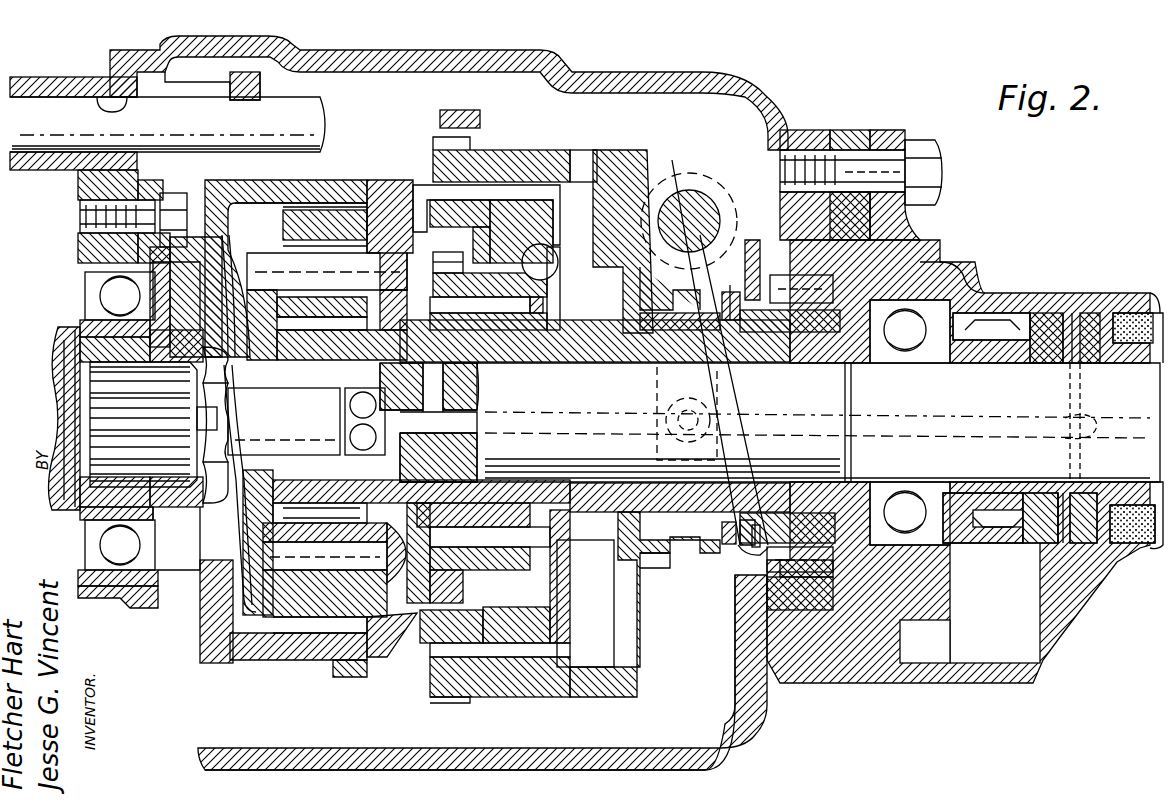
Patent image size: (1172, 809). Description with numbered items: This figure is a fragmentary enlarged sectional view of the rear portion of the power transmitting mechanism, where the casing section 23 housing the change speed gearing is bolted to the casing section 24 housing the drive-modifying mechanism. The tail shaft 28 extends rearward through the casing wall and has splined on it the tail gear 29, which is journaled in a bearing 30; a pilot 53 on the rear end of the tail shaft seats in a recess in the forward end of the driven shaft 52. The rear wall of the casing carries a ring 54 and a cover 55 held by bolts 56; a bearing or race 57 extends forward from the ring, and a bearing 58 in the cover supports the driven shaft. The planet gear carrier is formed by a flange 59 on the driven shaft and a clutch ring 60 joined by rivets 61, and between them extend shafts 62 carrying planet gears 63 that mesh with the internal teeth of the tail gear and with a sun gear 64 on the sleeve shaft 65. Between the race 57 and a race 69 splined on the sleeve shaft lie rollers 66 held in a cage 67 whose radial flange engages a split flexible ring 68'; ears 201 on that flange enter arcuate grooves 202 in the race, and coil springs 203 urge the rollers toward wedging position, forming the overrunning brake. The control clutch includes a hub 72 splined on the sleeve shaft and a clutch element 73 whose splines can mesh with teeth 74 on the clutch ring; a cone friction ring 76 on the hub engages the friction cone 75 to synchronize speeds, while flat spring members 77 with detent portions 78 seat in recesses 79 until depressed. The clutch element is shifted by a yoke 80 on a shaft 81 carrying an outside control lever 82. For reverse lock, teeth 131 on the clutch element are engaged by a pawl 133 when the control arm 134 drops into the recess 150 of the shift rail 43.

The casing section 23 is at (72, 80).
The casing section 24 is at (765, 738).
The intermediate or tail shaft 28 is at (64, 330).
The tail gear 29 is at (268, 660).
The bearing 30 is at (118, 565).
The shift rail 43 is at (282, 112).
The driven shaft 52 is at (955, 380).
The pilot 53 is at (242, 392).
The ring 54 is at (848, 145).
The cover 55 is at (895, 228).
The bolts 56 is at (880, 165).
The bearing or race 57 is at (768, 252).
The bearing 58 is at (948, 268).
The flange 59 is at (258, 330).
The clutch ring 60 is at (416, 225).
The rivets 61 is at (315, 563).
The shafts 62 is at (312, 262).
The planet gears 63 is at (328, 226).
The sun gear 64 is at (283, 513).
The sleeve shaft 65 is at (592, 519).
The rollers 66 is at (772, 280).
The cage 67 is at (745, 545).
The split flexible ring 68' is at (670, 590).
The race 69 is at (756, 548).
The hub 72 is at (528, 285).
The clutch element 73 is at (550, 160).
The teeth 74 is at (405, 195).
The friction cone 75 is at (438, 300).
The cone friction ring 76 is at (436, 258).
The flat spring members 77 is at (480, 190).
The detent portions 78 is at (530, 190).
The recesses 79 is at (506, 186).
The yoke 80 is at (712, 270).
The shaft 81 is at (698, 207).
The control lever 82 is at (805, 387).
The teeth 131 is at (440, 138).
The pawl 133 is at (462, 110).
The control arm 134 is at (300, 52).
The recess 150 is at (100, 95).
The ears 201 is at (698, 448).
The arcuate grooves 202 is at (722, 532).
The coil springs 203 is at (750, 558).